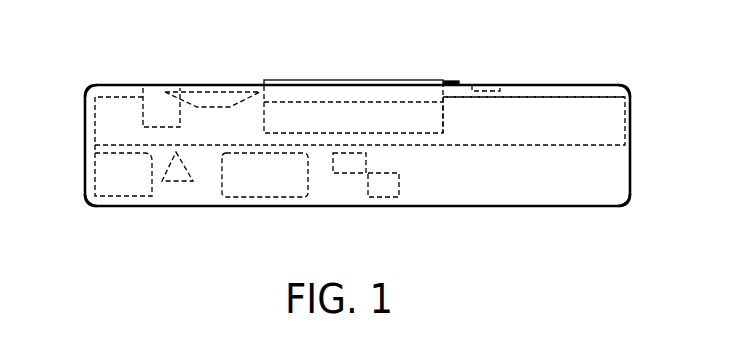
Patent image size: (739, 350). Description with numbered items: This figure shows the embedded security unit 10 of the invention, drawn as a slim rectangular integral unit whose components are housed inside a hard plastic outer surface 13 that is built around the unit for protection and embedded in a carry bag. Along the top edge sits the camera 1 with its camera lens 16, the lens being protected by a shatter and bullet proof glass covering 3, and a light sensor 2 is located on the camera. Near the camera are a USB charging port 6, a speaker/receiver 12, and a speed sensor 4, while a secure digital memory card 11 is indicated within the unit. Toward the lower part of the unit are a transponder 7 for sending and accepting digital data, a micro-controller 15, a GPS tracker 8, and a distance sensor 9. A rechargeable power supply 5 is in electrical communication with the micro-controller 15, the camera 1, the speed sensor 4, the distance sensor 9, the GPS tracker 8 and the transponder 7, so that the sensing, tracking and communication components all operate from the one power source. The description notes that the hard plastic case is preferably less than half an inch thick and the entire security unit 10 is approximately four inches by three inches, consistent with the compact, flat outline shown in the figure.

The camera 1 is at (447, 117).
The light sensor 2 is at (450, 82).
The shatter proof covering 3 is at (342, 82).
The speed sensor 4 is at (488, 83).
The rechargeable power supply 5 is at (540, 97).
The USB charging port 6 is at (148, 83).
The transponder 7 is at (170, 181).
The GPS tracker 8 is at (350, 174).
The distance sensor 9 is at (380, 200).
The security unit 10 is at (414, 219).
The secure digital memory card 11 is at (95, 145).
The speaker/receiver 12 is at (210, 93).
The hard plastic outer surface 13 is at (107, 85).
The micro-controller 15 is at (230, 205).
The camera lens 16 is at (383, 97).